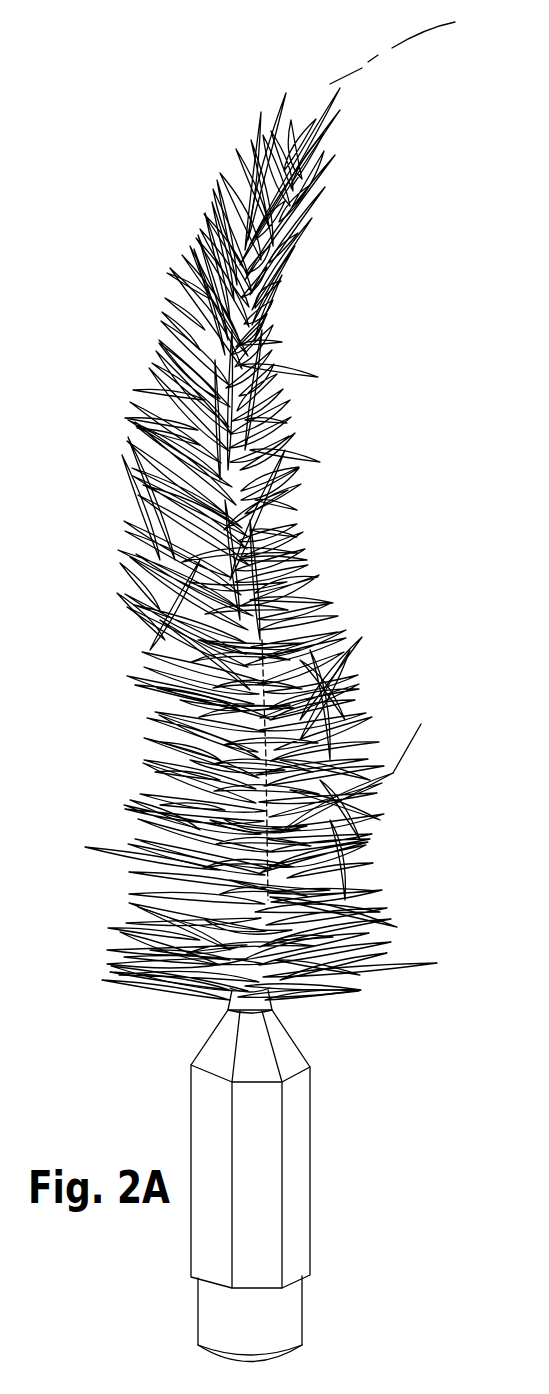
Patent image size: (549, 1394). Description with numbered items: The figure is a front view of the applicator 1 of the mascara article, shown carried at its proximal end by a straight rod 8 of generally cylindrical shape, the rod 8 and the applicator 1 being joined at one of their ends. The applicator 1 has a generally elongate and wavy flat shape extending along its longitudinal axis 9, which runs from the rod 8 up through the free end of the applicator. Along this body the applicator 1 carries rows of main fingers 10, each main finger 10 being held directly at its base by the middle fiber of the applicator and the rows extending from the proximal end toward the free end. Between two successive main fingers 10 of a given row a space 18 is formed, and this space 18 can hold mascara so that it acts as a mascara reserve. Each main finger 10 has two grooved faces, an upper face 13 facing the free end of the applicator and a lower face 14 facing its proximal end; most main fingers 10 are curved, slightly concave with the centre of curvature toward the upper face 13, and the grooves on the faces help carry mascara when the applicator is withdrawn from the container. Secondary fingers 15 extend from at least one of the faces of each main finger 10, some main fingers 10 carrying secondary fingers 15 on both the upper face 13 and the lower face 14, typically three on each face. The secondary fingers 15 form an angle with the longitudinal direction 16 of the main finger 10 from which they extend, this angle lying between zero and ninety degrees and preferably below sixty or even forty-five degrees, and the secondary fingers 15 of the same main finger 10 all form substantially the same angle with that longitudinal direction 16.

The applicator 1 is at (150, 235).
The rod 8 is at (297, 1192).
The longitudinal axis 9 is at (392, 48).
The main fingers 10 is at (261, 665).
The upper face 13 is at (344, 645).
The lower face 14 is at (360, 663).
The secondary fingers 15 is at (160, 742).
The longitudinal direction 16 is at (414, 754).
The space 18 is at (160, 806).